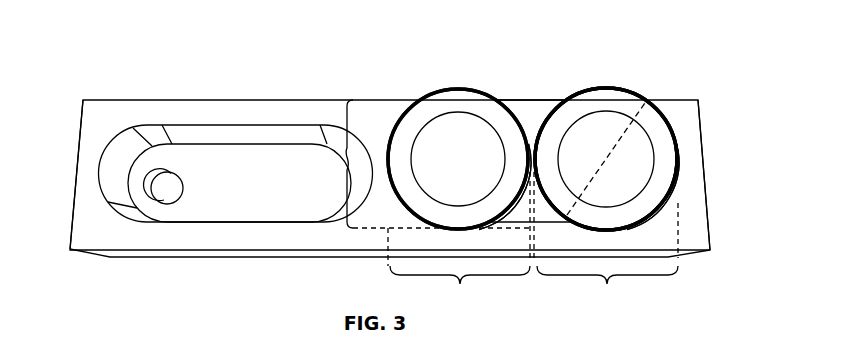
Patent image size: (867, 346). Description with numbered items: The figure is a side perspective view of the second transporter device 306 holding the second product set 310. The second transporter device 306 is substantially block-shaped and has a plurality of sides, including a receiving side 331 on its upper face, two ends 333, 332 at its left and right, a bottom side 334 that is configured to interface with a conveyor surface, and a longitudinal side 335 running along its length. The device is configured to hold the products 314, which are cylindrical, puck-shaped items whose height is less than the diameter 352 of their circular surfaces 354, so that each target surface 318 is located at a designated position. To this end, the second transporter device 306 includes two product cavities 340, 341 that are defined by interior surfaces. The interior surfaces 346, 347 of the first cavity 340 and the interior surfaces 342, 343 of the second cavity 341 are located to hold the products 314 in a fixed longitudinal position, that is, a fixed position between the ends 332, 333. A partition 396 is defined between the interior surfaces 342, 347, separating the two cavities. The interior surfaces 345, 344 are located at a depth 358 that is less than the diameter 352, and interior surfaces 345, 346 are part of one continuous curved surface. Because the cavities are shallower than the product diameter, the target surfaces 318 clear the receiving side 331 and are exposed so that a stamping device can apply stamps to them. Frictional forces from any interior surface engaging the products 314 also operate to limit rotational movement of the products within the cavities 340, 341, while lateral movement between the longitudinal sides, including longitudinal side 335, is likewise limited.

The second transporter device 306 is at (108, 46).
The end 333 is at (64, 160).
The end 332 is at (708, 157).
The bottom side 334 is at (344, 268).
The longitudinal side 335 is at (207, 116).
The depth 358 is at (328, 164).
The receiving side 331 is at (372, 80).
The partition 396 is at (545, 99).
The target surface 318 is at (460, 80).
The product 314 is at (503, 106).
The second product set 310 is at (647, 66).
The interior surface 347 is at (508, 115).
The interior surface 346 is at (397, 141).
The interior surface 345 is at (453, 224).
The interior surface 343 is at (666, 134).
The interior surface 342 is at (554, 121).
The interior surface 344 is at (607, 226).
The circular surface 354 is at (620, 165).
The diameter 352 is at (598, 168).
The product cavity 340 is at (460, 288).
The product cavity 341 is at (607, 288).